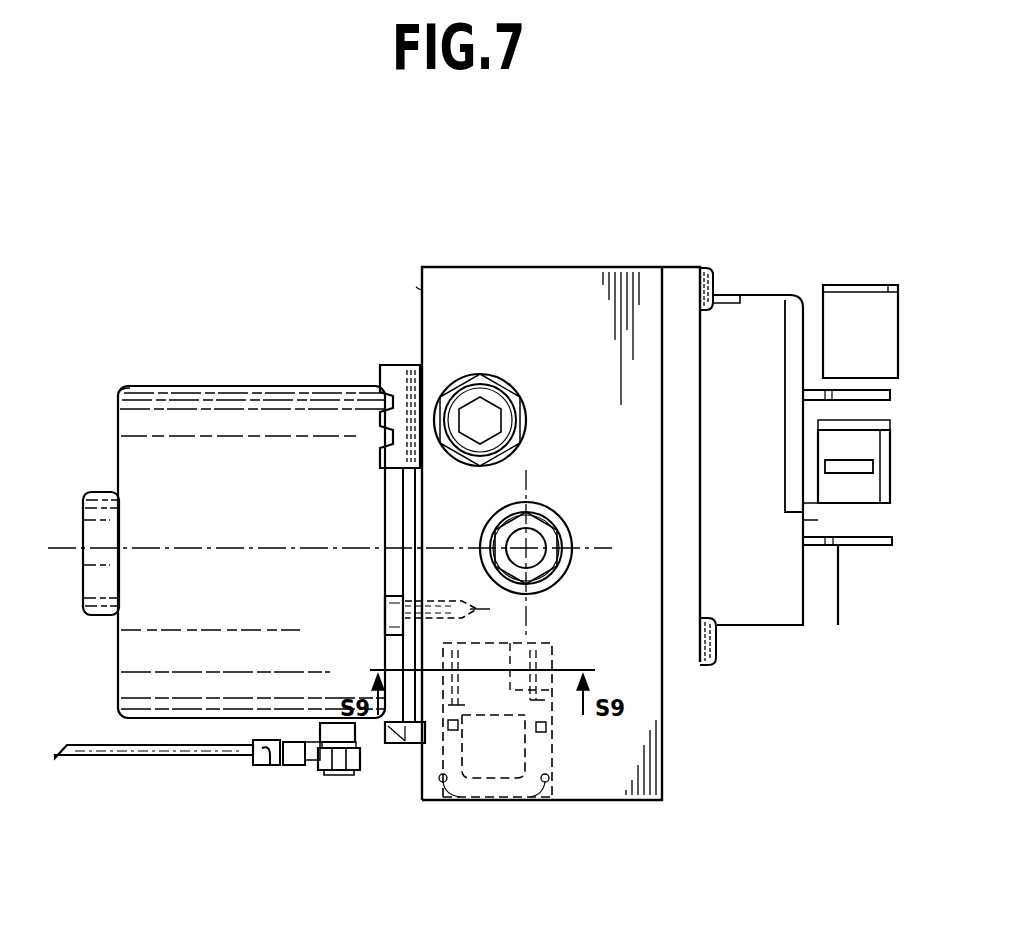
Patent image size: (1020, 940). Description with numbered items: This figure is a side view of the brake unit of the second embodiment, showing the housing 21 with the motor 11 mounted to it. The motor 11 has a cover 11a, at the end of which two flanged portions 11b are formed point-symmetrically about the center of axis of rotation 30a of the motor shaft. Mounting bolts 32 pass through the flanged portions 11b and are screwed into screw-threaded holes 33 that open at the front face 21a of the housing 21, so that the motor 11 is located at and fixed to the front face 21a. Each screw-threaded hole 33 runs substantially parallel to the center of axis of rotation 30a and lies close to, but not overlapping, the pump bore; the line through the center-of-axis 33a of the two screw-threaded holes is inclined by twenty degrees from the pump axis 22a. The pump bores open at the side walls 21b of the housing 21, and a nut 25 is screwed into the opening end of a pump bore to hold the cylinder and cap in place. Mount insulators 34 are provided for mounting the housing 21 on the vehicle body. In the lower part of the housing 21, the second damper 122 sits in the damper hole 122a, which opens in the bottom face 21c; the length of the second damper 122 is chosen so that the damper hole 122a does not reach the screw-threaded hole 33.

The motor 11 is at (163, 386).
The cover 11a is at (126, 438).
The flanged portion 11b is at (408, 651).
The housing 21 is at (480, 266).
The front face 21a is at (421, 293).
The side wall 21b is at (593, 272).
The bottom face 21c is at (632, 800).
The pump axis 22a is at (530, 548).
The nut 25 is at (558, 574).
The center of axis of rotation 30a is at (187, 548).
The mounting bolt 32 is at (388, 596).
The screw-threaded hole 33 is at (445, 597).
The center-of-axis of the screw-threaded hole 33a is at (383, 612).
The mount insulator 34 is at (480, 412).
The second damper 122 is at (508, 800).
The damper hole 122a is at (480, 750).